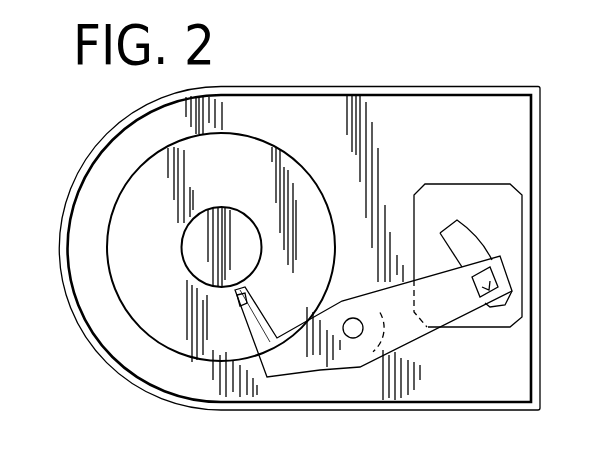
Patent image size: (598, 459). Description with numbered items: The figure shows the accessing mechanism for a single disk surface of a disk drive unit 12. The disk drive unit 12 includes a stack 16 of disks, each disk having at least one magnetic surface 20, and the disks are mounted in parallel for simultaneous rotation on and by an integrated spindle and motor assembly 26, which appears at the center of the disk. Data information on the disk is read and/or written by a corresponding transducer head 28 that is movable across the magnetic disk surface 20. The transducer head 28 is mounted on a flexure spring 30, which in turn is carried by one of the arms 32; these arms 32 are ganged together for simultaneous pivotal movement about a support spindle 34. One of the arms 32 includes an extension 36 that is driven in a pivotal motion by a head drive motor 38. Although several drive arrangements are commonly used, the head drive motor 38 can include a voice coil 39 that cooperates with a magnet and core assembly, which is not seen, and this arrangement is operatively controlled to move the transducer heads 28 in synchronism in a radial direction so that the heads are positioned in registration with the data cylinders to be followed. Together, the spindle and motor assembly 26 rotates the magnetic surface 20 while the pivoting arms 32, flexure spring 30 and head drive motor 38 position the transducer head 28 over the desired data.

The disk drive unit 12 is at (408, 76).
The stack 16 is at (91, 244).
The magnetic surface 20 is at (153, 183).
The integrated spindle and motor assembly 26 is at (242, 228).
The transducer head 28 is at (242, 304).
The flexure spring 30 is at (253, 322).
The arm 32 is at (271, 364).
The support spindle 34 is at (354, 318).
The extension 36 is at (448, 310).
The head drive motor 38 is at (490, 194).
The voice coil 39 is at (486, 281).